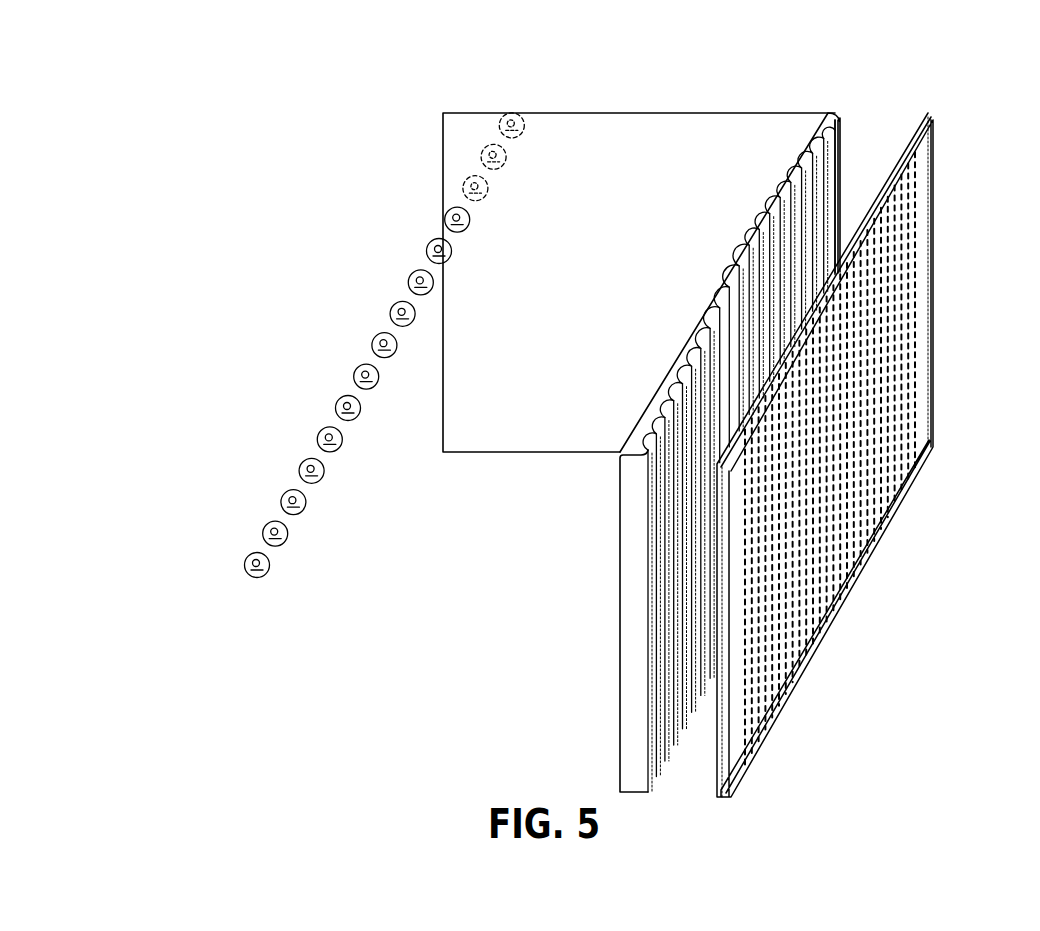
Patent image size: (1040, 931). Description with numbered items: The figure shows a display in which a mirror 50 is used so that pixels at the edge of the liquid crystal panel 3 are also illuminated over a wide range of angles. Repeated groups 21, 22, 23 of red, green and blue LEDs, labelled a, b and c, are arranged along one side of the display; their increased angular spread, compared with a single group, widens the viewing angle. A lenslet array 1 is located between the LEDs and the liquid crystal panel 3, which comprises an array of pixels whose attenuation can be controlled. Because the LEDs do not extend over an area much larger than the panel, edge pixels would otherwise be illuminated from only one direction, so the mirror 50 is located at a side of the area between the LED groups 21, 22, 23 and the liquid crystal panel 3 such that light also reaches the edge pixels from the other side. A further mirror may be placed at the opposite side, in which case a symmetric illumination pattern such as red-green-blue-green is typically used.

The mirror 50 is at (641, 112).
The lenslet array 1 is at (842, 172).
The liquid crystal panel 3 is at (936, 339).
The group of red, green and blue LEDs 21 is at (267, 440).
The group of red, green and blue LEDs 22 is at (337, 313).
The group of red, green and blue LEDs 23 is at (405, 197).